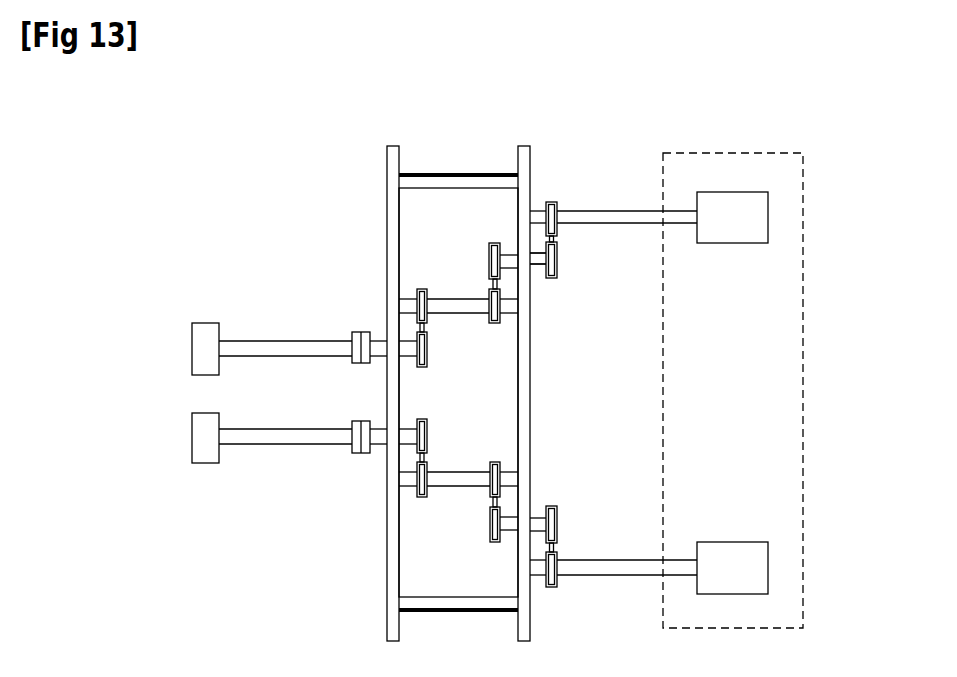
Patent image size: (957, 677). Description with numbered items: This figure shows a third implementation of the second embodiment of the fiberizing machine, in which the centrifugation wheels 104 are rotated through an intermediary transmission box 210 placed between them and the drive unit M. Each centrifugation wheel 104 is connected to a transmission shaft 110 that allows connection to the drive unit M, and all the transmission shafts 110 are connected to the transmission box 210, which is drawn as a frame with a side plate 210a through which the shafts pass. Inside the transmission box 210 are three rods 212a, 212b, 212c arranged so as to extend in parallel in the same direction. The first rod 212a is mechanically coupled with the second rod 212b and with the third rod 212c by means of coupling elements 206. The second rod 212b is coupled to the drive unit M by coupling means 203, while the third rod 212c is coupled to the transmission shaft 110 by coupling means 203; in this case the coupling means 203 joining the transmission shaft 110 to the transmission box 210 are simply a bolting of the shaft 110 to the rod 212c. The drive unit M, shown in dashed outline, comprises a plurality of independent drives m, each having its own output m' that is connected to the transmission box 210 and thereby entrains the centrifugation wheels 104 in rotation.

The centrifugation wheel 104 is at (207, 328).
The transmission shaft 110 is at (279, 340).
The coupling means 203 is at (360, 319).
The coupling elements 206 is at (516, 286).
The transmission box 210 is at (454, 146).
The side plate of gear box 210a is at (524, 151).
The first rod 212a is at (462, 295).
The second rod 212b is at (536, 267).
The third rod 212c is at (410, 349).
The drive unit M is at (727, 139).
The drive m is at (732, 393).
The output m' is at (613, 363).